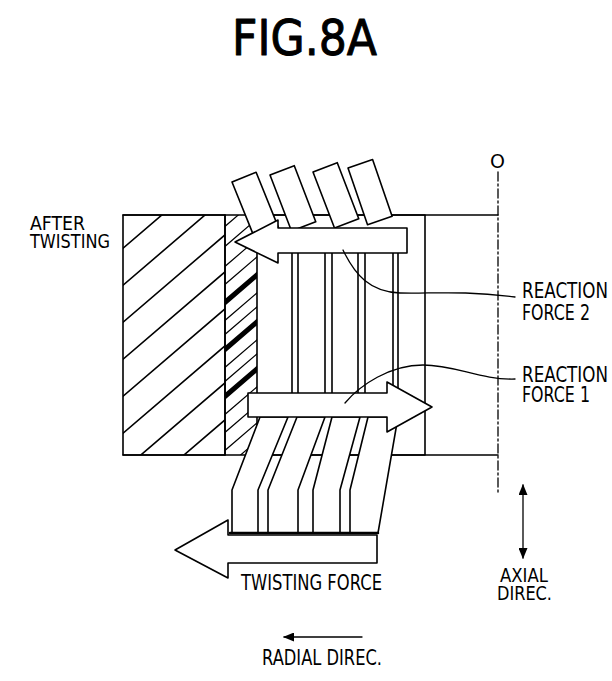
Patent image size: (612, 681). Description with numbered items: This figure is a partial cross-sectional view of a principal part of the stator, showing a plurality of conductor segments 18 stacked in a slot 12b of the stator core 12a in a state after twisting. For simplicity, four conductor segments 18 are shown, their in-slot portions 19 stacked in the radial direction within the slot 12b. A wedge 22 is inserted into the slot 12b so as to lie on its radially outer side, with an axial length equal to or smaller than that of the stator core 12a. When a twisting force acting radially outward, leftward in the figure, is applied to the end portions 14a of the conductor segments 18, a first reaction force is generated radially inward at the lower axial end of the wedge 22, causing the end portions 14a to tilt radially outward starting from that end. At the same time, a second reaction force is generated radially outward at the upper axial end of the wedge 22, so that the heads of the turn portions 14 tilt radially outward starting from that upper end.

The stator core 12a is at (164, 208).
The slot 12b is at (256, 373).
The turn portion 14 is at (292, 192).
The end portion 14a is at (285, 520).
The conductor segment 18 is at (356, 152).
The in-slot portion 19 is at (375, 347).
The wedge 22 is at (256, 325).